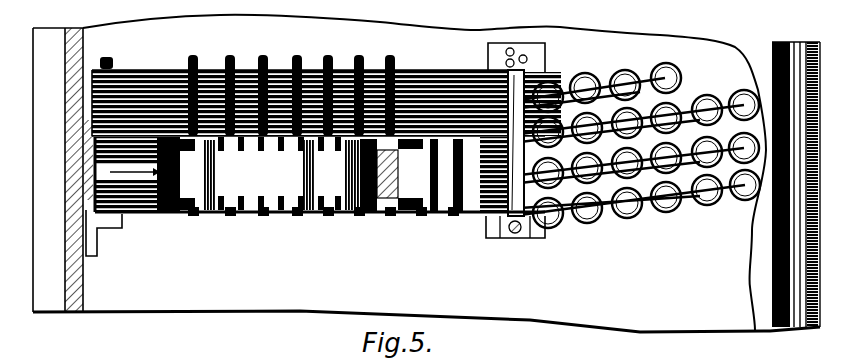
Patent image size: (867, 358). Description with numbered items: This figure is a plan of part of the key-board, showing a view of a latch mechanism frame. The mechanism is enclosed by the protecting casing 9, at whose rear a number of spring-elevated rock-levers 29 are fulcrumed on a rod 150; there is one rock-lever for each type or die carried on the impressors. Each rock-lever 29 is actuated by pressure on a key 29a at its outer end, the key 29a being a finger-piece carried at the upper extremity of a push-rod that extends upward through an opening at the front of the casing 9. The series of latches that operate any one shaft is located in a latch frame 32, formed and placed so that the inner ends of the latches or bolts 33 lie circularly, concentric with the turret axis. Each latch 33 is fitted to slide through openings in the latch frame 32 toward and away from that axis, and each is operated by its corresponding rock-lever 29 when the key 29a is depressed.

The protecting casing 9 is at (73, 100).
The rod 150 is at (124, 53).
The rock-lever 29 is at (434, 92).
The key 29a is at (656, 66).
The latch frame 32 is at (267, 139).
The latch 33 is at (408, 205).